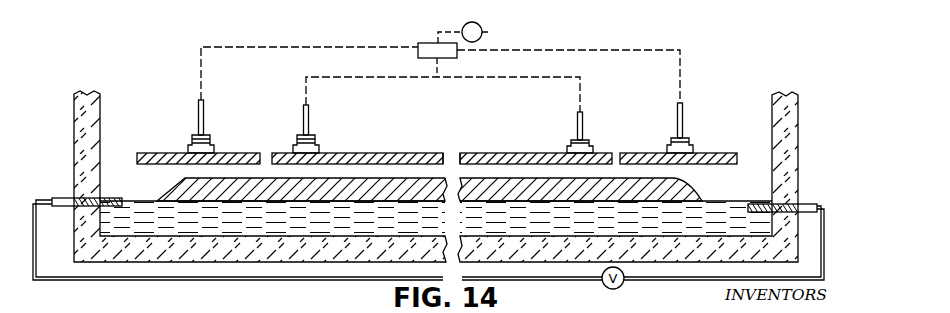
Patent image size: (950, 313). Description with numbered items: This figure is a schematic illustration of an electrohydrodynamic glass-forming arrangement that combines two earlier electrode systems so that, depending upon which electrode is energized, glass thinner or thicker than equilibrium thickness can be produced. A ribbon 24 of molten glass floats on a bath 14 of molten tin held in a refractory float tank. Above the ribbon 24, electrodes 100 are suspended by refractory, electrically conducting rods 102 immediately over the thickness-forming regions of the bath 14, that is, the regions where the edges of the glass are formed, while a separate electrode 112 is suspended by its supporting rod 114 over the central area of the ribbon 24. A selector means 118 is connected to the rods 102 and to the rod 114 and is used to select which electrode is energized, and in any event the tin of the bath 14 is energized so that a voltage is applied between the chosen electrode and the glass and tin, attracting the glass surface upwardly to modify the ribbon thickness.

The bath of molten tin 14 is at (740, 203).
The ribbon 24 is at (172, 188).
The electrodes 100 is at (158, 152).
The refractory, electrically conducting rods 102 is at (198, 117).
The electrode 112 is at (460, 153).
The supporting rod 114 is at (304, 127).
The selector means 118 is at (457, 56).